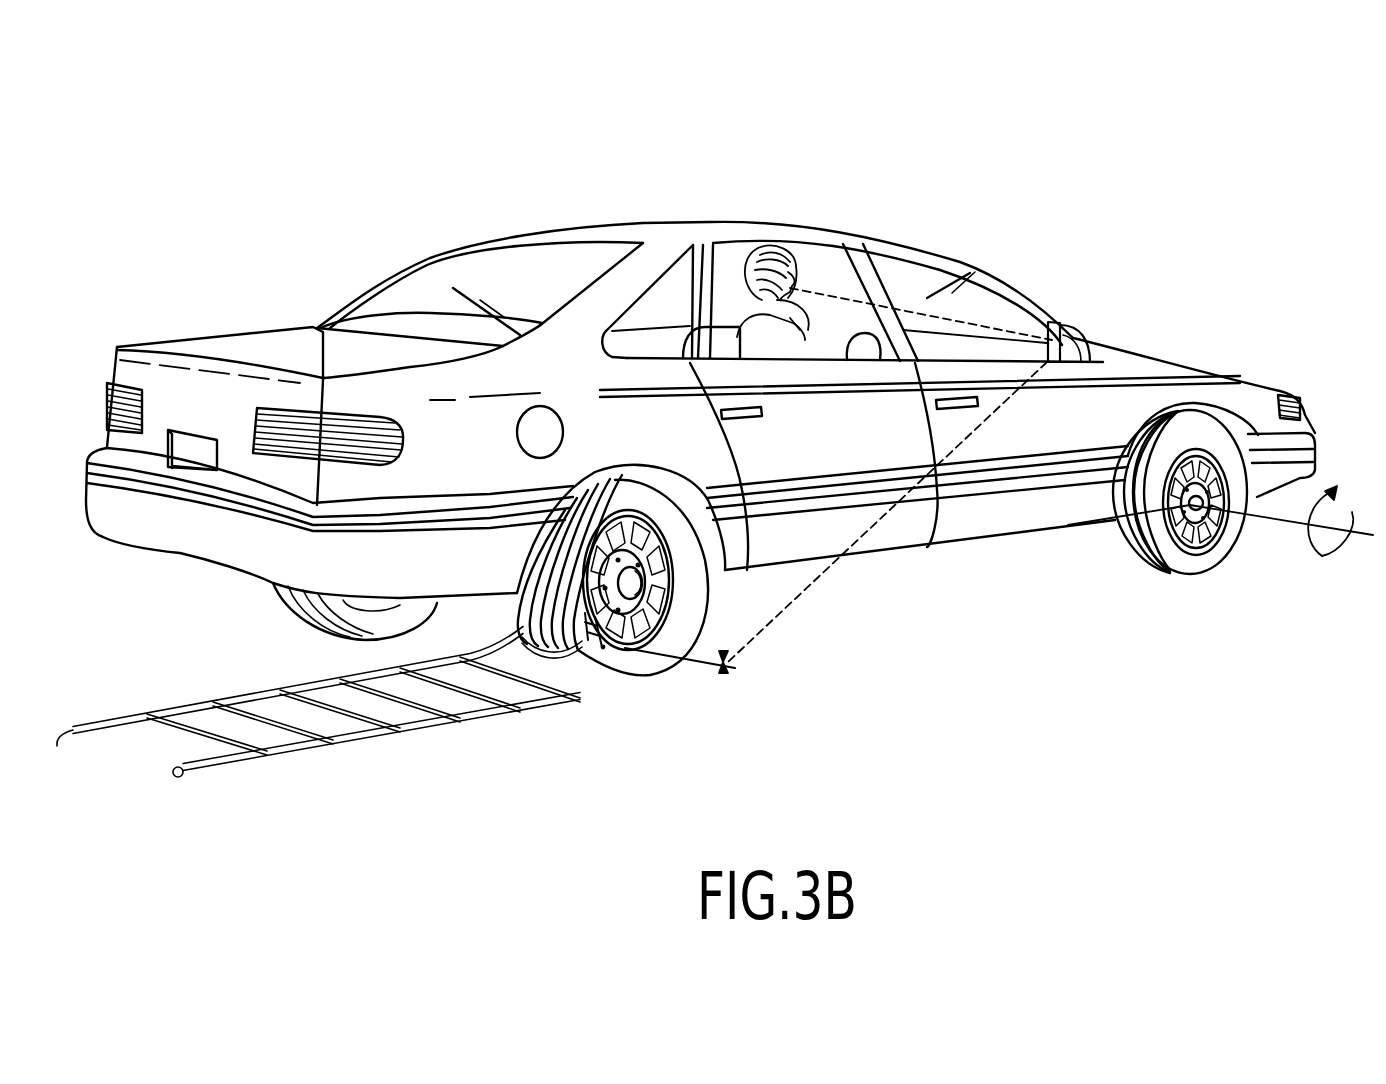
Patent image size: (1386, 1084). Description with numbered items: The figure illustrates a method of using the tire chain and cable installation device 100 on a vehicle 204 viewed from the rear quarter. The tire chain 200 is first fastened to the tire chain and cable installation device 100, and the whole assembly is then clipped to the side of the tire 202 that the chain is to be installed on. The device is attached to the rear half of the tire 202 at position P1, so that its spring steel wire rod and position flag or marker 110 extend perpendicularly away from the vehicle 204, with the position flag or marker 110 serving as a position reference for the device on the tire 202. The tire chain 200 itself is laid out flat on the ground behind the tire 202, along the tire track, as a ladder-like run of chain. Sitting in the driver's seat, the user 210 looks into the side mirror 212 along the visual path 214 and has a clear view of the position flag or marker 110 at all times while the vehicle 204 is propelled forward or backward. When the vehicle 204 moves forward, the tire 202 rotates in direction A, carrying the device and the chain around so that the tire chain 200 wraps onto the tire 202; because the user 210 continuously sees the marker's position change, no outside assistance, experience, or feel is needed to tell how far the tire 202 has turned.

The tire chain and cable installation device 100 is at (543, 655).
The position flag or marker 110 is at (724, 673).
The tire chain 200 is at (312, 768).
The tire 202 is at (627, 670).
The vehicle 204 is at (1017, 284).
The user 210 is at (800, 265).
The side mirror 212 is at (1097, 343).
The visual path 214 is at (838, 297).
The position P1 is at (603, 648).
The direction A is at (1321, 556).